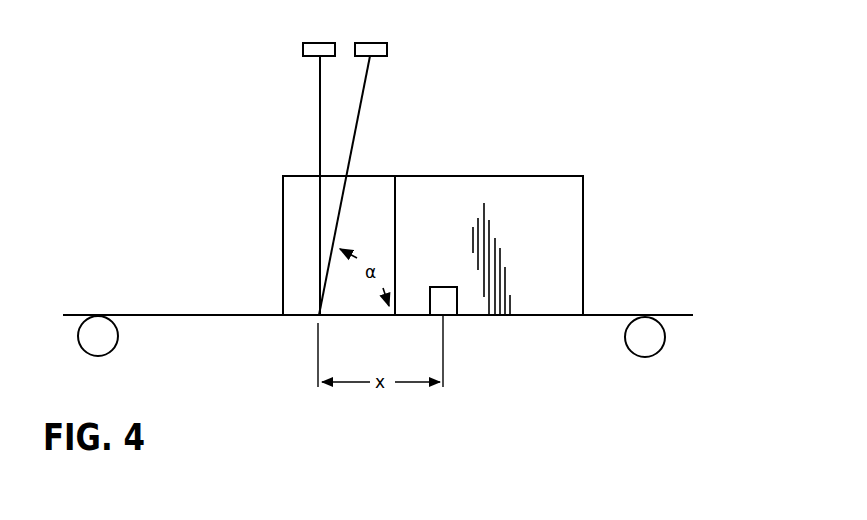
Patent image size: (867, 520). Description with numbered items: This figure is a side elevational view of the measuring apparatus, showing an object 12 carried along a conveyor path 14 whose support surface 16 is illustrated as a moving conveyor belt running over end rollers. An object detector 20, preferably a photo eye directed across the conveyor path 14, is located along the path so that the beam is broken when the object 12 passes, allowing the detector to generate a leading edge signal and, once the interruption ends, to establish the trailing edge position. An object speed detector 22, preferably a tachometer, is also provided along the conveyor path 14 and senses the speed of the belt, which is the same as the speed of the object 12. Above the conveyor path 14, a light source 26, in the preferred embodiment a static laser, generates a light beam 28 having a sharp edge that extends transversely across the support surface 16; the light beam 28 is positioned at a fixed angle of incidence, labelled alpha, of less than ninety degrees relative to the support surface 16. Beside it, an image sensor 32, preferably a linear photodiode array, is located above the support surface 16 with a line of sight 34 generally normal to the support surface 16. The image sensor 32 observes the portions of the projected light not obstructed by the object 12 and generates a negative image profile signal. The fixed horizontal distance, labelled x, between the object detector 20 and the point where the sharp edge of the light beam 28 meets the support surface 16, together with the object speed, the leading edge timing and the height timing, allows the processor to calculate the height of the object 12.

The object 12 is at (553, 225).
The conveyor path 14 is at (175, 315).
The support surface 16 is at (607, 315).
The object detector 20 is at (455, 303).
The object speed detector 22 is at (656, 353).
The light source 26 is at (387, 49).
The light beam 28 is at (362, 98).
The image sensor 32 is at (303, 49).
The line of sight 34 is at (320, 118).